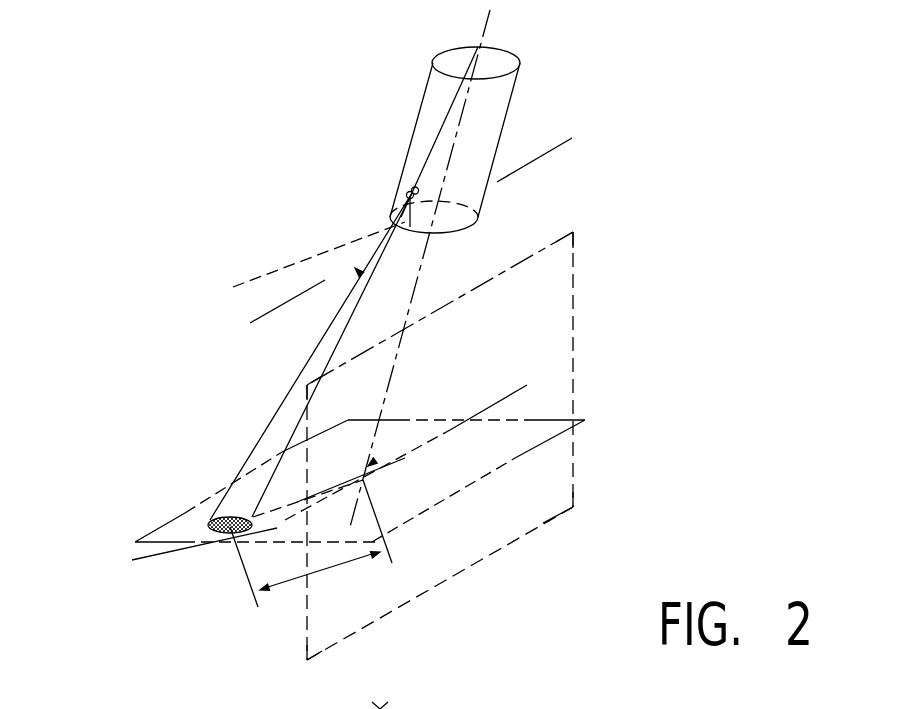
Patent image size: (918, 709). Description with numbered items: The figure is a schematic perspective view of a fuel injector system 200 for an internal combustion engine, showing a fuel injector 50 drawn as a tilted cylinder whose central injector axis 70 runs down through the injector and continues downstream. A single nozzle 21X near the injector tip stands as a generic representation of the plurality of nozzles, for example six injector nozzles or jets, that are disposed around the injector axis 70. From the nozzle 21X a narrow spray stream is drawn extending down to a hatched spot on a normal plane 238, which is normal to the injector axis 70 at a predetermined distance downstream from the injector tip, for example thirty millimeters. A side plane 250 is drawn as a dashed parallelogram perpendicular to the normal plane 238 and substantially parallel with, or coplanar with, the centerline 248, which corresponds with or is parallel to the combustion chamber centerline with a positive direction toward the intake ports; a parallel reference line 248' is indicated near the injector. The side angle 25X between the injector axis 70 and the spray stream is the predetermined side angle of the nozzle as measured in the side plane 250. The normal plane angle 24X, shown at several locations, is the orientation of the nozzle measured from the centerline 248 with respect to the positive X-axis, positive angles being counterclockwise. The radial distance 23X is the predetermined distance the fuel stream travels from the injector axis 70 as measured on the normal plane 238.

The fuel injector system 200 is at (116, 227).
The fuel injector 50 is at (516, 84).
The injector axis 70 is at (486, 23).
The side angle 25X is at (475, 167).
The nozzle 21X is at (403, 187).
The scan line 248' is at (584, 165).
The centerline 248 is at (484, 430).
The side plane 250 is at (543, 523).
The normal plane 238 is at (183, 513).
The radial distance 23X is at (340, 572).
The normal plane angle 24X is at (341, 236).